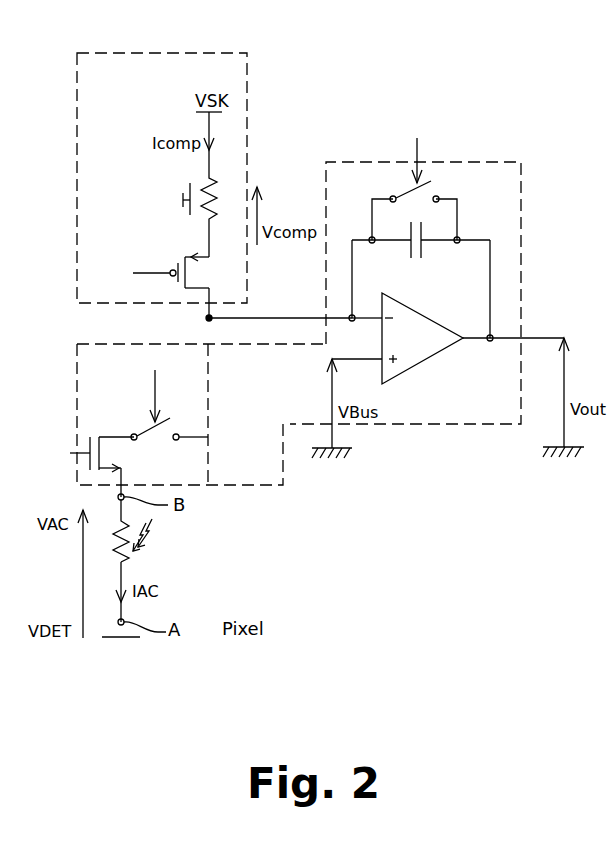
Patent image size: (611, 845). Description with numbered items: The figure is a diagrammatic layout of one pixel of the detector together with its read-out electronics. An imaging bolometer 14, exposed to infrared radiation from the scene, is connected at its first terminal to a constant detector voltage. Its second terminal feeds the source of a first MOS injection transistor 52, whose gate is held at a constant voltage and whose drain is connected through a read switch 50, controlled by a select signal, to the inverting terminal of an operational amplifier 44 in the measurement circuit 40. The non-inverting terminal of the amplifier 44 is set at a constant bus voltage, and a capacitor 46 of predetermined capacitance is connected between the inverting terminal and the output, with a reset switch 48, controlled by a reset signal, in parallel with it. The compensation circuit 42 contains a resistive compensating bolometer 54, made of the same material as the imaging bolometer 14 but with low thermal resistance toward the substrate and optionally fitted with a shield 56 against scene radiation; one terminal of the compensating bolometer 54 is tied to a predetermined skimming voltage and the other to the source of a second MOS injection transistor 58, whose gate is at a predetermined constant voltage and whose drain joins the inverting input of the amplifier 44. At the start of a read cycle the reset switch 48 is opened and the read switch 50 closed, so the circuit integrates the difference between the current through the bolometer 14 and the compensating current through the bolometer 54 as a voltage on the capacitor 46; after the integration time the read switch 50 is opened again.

The imaging bolometer 14 is at (127, 560).
The measurement circuit 40 is at (521, 236).
The compensation circuit 42 is at (178, 53).
The operational amplifier 44 is at (430, 350).
The capacitor 46 is at (425, 250).
The reset switch 48 is at (405, 190).
The read switch 50 is at (188, 428).
The first MOS injection transistor 52 is at (99, 437).
The compensating bolometer 54 is at (217, 184).
The shield 56 is at (190, 183).
The second MOS injection transistor 58 is at (178, 263).